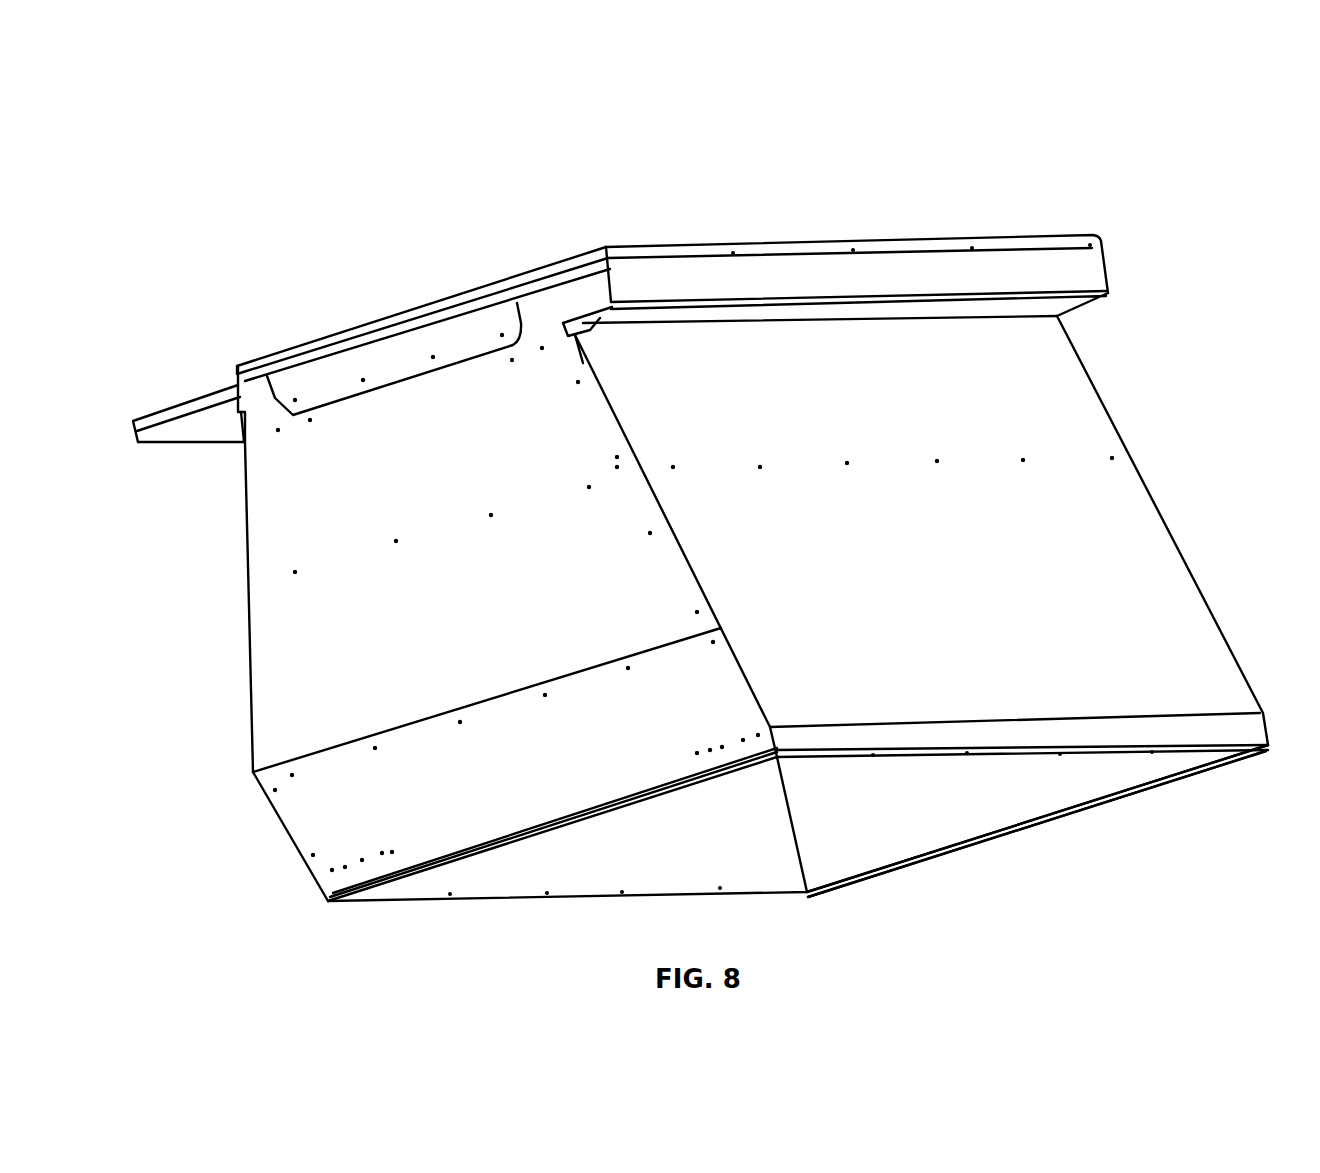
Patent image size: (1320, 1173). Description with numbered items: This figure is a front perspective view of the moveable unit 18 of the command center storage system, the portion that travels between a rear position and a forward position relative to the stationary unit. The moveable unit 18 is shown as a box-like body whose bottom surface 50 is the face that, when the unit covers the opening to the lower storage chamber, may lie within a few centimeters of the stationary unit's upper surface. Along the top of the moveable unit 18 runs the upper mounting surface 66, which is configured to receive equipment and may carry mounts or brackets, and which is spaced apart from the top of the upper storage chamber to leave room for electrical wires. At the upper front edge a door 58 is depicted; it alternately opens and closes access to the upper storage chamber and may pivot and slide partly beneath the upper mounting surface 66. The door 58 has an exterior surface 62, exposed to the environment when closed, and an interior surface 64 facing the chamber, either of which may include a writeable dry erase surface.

The moveable unit 18 is at (226, 99).
The bottom surface 50 is at (958, 815).
The door 58 is at (174, 397).
The exterior surface 62 is at (208, 388).
The interior surface 64 is at (212, 443).
The upper mounting surface 66 is at (466, 280).